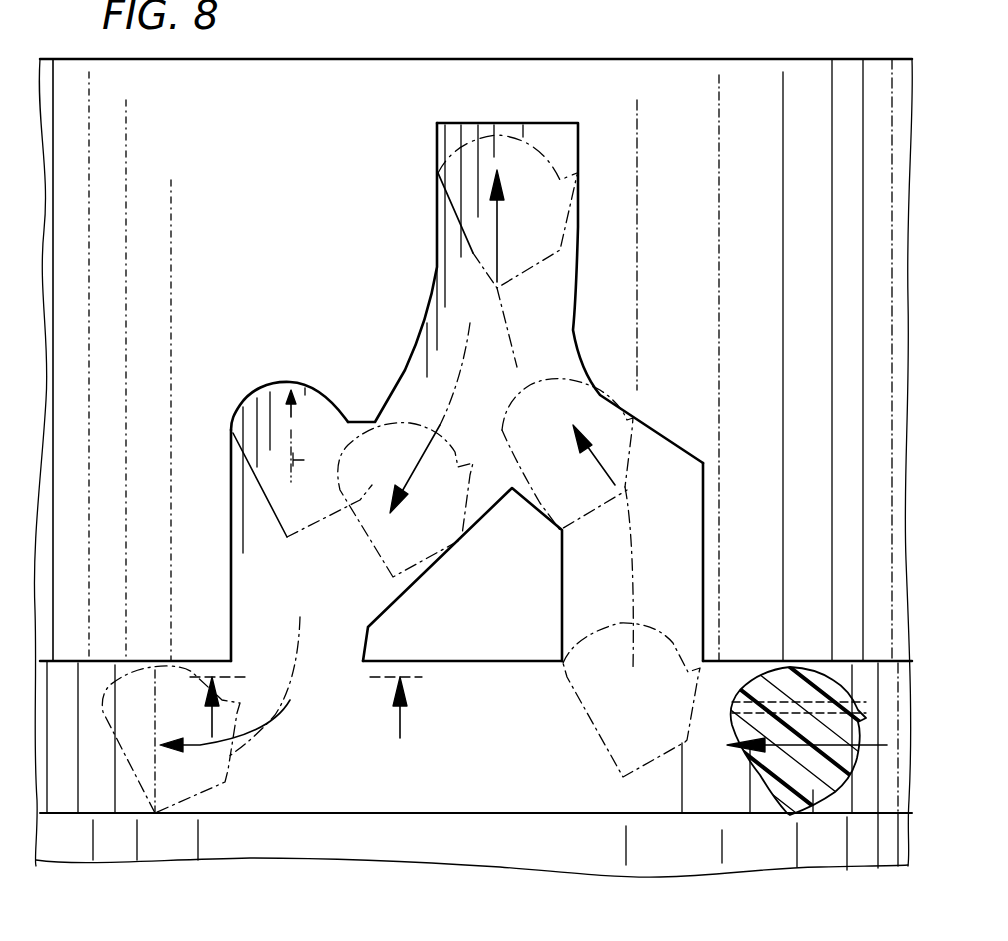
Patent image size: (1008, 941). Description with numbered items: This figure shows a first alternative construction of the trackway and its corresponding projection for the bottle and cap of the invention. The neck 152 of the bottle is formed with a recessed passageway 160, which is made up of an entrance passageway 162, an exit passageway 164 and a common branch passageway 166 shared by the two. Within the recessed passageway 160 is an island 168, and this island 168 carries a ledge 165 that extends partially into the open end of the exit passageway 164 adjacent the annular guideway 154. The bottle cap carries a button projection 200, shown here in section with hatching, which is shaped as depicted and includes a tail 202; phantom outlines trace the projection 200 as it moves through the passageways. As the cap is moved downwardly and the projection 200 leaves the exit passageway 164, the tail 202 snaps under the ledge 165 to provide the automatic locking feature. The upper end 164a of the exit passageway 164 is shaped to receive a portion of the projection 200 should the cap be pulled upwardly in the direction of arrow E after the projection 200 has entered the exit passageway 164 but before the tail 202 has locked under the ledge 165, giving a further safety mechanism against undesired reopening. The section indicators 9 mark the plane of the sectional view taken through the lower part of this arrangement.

The neck 152 is at (774, 48).
The annular guideway 154 is at (397, 813).
The recessed passageway 160 is at (565, 307).
The entrance passageway 162 is at (692, 507).
The exit passageway 164 is at (236, 590).
The upper end of exit passageway 164a is at (240, 408).
The ledge 165 is at (365, 650).
The common branch passageway 166 is at (440, 268).
The island 168 is at (505, 662).
The button projection 200 is at (785, 672).
The tail 202 is at (848, 705).
The section line 9- 9 is at (300, 707).
The arrow E is at (304, 451).